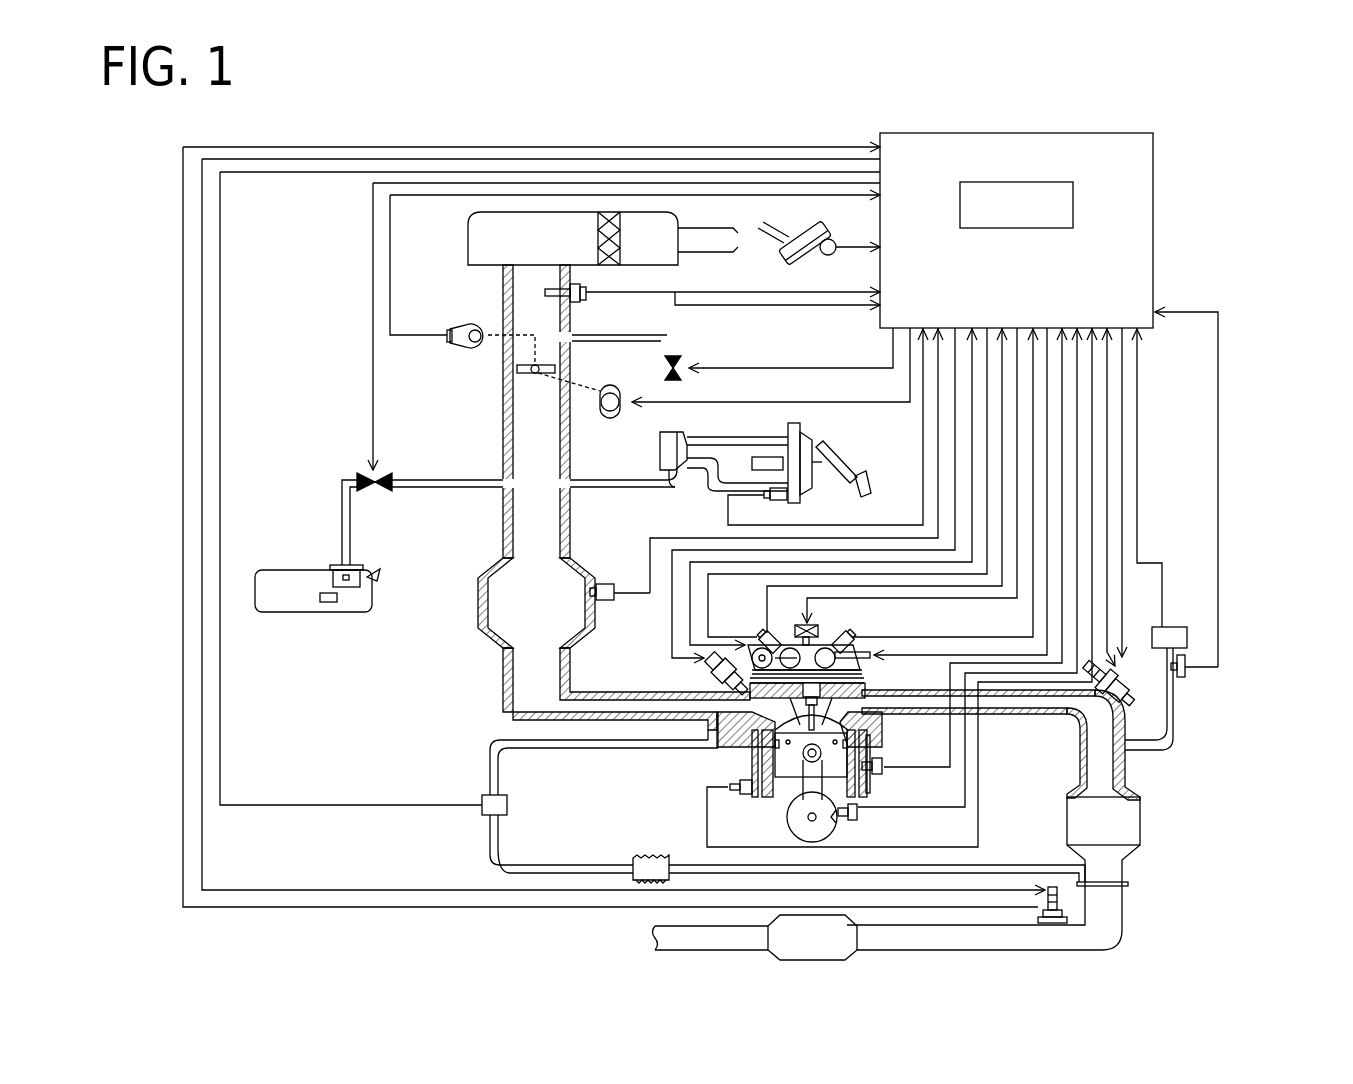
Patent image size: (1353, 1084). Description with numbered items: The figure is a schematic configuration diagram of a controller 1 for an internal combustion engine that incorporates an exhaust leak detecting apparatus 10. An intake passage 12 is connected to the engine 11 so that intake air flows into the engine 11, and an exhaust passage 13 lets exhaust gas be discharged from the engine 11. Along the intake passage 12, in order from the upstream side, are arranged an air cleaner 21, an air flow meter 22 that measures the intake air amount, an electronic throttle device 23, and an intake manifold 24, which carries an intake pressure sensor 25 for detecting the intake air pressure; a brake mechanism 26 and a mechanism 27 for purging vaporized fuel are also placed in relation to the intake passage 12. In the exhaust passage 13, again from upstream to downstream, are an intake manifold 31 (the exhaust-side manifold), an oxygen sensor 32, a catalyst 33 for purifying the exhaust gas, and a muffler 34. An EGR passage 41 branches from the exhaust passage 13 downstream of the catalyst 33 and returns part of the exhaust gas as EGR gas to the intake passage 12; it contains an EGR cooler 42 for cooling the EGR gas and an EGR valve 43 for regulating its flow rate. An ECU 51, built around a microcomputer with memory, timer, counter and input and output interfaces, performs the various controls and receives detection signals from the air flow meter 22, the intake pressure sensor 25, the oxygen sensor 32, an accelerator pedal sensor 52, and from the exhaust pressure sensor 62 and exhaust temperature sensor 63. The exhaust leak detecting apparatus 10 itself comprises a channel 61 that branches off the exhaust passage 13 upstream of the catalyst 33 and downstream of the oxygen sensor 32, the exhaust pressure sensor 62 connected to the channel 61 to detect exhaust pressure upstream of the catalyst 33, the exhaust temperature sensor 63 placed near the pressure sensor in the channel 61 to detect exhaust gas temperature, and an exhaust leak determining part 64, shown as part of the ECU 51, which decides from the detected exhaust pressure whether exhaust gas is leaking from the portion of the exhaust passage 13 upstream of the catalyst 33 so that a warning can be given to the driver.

The controller for internal combustion engine 1 is at (1195, 245).
The exhaust leak detecting apparatus 10 is at (1188, 717).
The engine 11 is at (720, 761).
The intake passage 12 is at (498, 432).
The exhaust passage 13 is at (1135, 780).
The air cleaner 21 is at (468, 232).
The air flow meter 22 is at (585, 298).
The electronic throttle device 23 is at (527, 377).
The intake manifold 24 is at (478, 600).
The intake pressure sensor 25 is at (612, 583).
The brake mechanism 26 is at (838, 438).
The mechanism for purging vaporized fuel 27 is at (328, 508).
The intake manifold 31 is at (905, 712).
The oxygen sensor 32 is at (1124, 692).
The catalyst 33 is at (1116, 841).
The muffler 34 is at (826, 955).
The EGR passage 41 is at (983, 866).
The EGR cooler 42 is at (652, 855).
The EGR valve 43 is at (508, 808).
The ECU 51 is at (1026, 283).
The accelerator pedal sensor 52 is at (820, 258).
The channel 61 is at (1175, 725).
The exhaust pressure sensor 62 is at (1176, 627).
The exhaust temperature sensor 63 is at (1186, 672).
The exhaust leak determining part 64 is at (1058, 226).